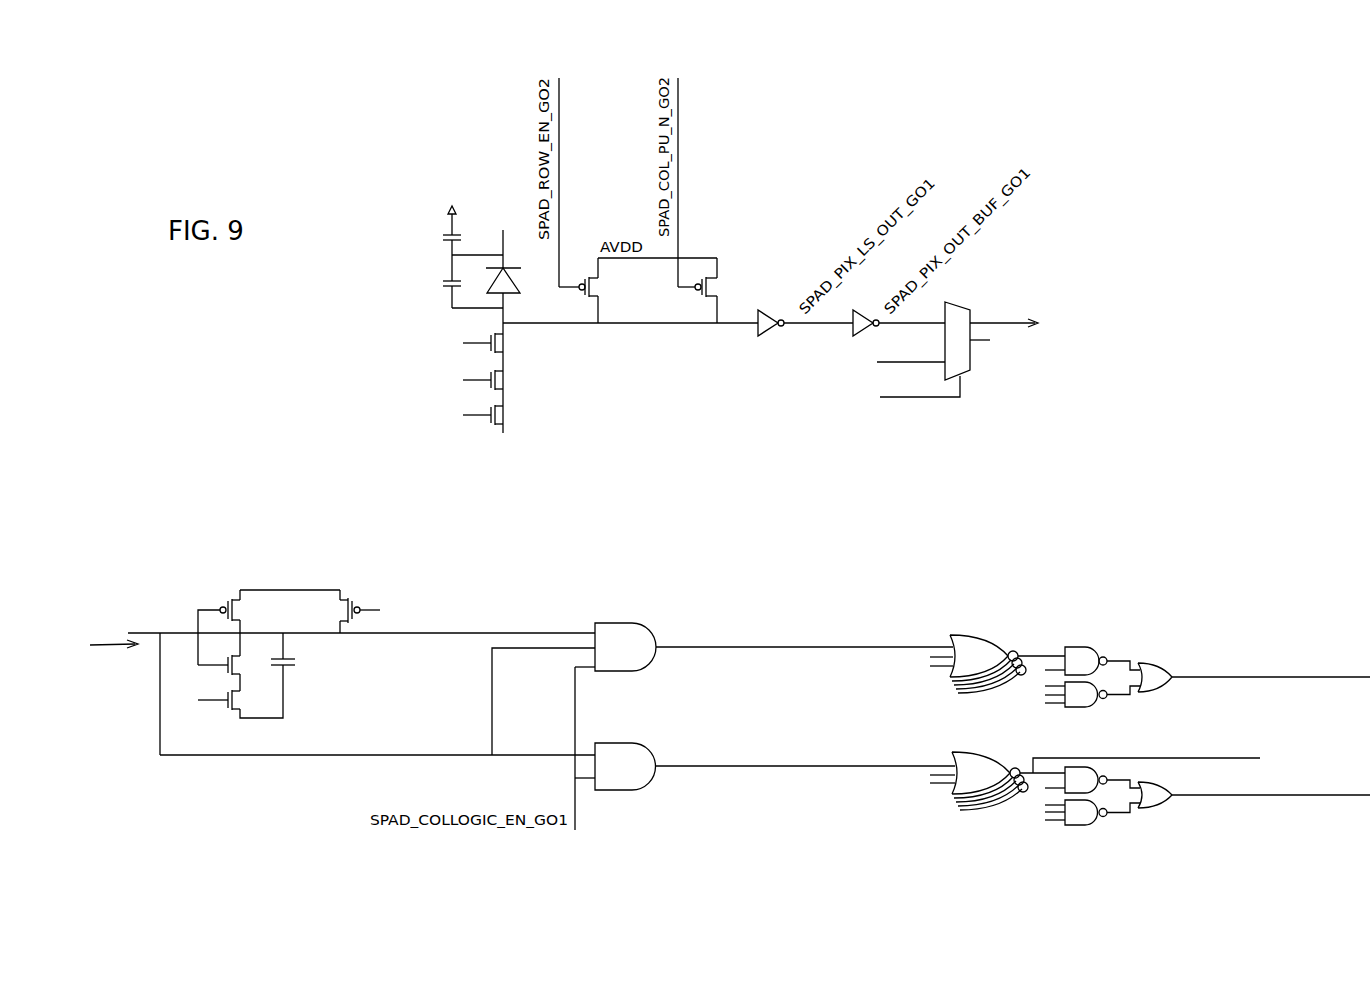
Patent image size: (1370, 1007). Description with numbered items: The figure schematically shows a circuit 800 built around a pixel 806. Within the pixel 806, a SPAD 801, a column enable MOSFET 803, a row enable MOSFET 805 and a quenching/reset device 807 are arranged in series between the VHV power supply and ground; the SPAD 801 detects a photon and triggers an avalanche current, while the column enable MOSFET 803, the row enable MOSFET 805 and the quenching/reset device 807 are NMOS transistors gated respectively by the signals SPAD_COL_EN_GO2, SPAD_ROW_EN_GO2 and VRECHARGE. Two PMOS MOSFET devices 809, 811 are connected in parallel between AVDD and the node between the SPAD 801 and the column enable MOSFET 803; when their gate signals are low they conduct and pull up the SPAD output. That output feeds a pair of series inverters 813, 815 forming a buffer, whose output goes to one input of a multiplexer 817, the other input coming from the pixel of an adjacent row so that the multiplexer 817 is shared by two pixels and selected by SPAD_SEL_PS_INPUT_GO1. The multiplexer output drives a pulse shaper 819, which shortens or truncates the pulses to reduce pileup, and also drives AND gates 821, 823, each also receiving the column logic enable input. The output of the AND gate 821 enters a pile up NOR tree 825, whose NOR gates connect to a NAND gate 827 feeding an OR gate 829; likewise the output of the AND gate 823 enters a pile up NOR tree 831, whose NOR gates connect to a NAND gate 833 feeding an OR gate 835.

The circuit 800 is at (1206, 399).
The SPAD 801 is at (492, 267).
The column enable MOSFET 803 is at (496, 339).
The row enable MOSFET 805 is at (496, 377).
The pixel 806 is at (796, 131).
The quenching/reset device 807 is at (496, 413).
The MOSFET device 809 is at (592, 274).
The MOSFET device 811 is at (719, 273).
The inverter 813 is at (774, 316).
The inverter 815 is at (863, 313).
The multiplexer 817 is at (958, 372).
The pulse shaper 819 is at (287, 556).
The AND gate 821 is at (633, 621).
The AND gate 823 is at (650, 782).
The pile up NOR tree 825 is at (975, 632).
The NAND gate 827 is at (1080, 645).
The OR gate 829 is at (1148, 660).
The pile up NOR tree 831 is at (948, 789).
The NAND gate 833 is at (1060, 790).
The OR gate 835 is at (1169, 803).